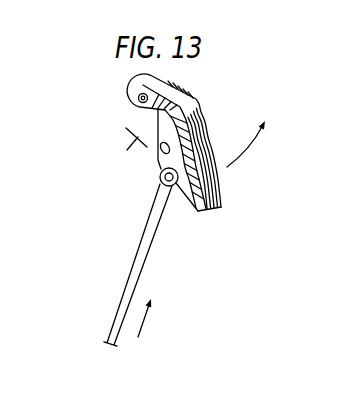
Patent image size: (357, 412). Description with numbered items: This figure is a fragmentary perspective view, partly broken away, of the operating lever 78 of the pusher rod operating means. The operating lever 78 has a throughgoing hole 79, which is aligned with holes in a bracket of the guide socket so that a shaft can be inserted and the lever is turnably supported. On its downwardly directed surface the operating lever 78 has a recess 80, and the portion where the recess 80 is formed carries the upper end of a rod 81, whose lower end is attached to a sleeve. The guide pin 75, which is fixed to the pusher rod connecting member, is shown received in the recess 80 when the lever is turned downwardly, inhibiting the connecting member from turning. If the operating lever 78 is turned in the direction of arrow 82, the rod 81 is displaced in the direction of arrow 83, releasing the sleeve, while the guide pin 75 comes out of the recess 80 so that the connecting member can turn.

The guide pin 75 is at (168, 138).
The operating lever 78 is at (197, 109).
The throughgoing hole 79 is at (132, 107).
The recess 80 is at (160, 167).
The rod 81 is at (140, 271).
The arrow 82 is at (242, 151).
The arrow 83 is at (143, 323).